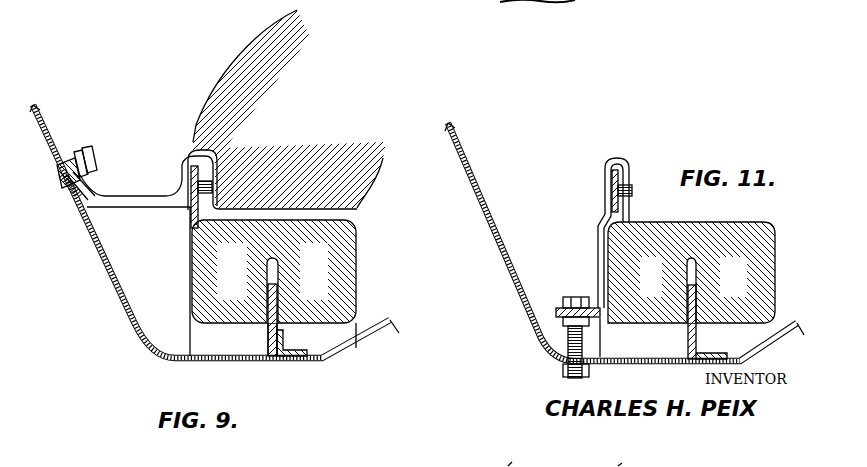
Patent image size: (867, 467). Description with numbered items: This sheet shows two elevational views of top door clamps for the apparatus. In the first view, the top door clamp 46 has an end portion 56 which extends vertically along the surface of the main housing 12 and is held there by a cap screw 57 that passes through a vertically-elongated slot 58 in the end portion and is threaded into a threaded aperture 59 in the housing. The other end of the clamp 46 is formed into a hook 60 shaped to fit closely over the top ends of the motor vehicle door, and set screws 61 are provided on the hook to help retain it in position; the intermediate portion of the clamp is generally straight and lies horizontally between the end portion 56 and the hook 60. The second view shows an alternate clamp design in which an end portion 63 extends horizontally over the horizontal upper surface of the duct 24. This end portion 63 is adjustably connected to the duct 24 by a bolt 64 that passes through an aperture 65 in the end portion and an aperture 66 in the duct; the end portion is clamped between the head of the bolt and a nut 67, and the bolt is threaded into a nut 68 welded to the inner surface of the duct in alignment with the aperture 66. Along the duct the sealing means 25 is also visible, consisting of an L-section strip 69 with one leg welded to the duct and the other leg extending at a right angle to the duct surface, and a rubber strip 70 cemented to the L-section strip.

In FIG. 9, the main housing 12 is at (43, 127).
In FIG. 11, the main housing 12 is at (482, 192).
In FIG. 11, the duct 24 is at (632, 358).
In FIG. 9, the sealing means 25 is at (267, 336).
In FIG. 11, the sealing means 25 is at (699, 331).
In FIG. 9, the top door clamp 46 is at (133, 197).
In FIG. 9, the end portion 56 is at (78, 160).
In FIG. 9, the cap screw 57 is at (93, 162).
In FIG. 9, the vertically-elongated slot 58 is at (57, 170).
In FIG. 9, the threaded aperture 59 is at (73, 183).
In FIG. 9, the hook 60 is at (186, 158).
In FIG. 9, the set screws 61 is at (214, 186).
In FIG. 11, the end portion 63 is at (559, 313).
In FIG. 11, the bolt 64 is at (573, 297).
In FIG. 11, the aperture 65 is at (588, 319).
In FIG. 11, the aperture 66 is at (583, 360).
In FIG. 11, the nut 67 is at (562, 321).
In FIG. 11, the nut 68 is at (568, 368).
In FIG. 9, the L-section strip 69 is at (283, 336).
In FIG. 9, the rubber strip 70 is at (278, 296).